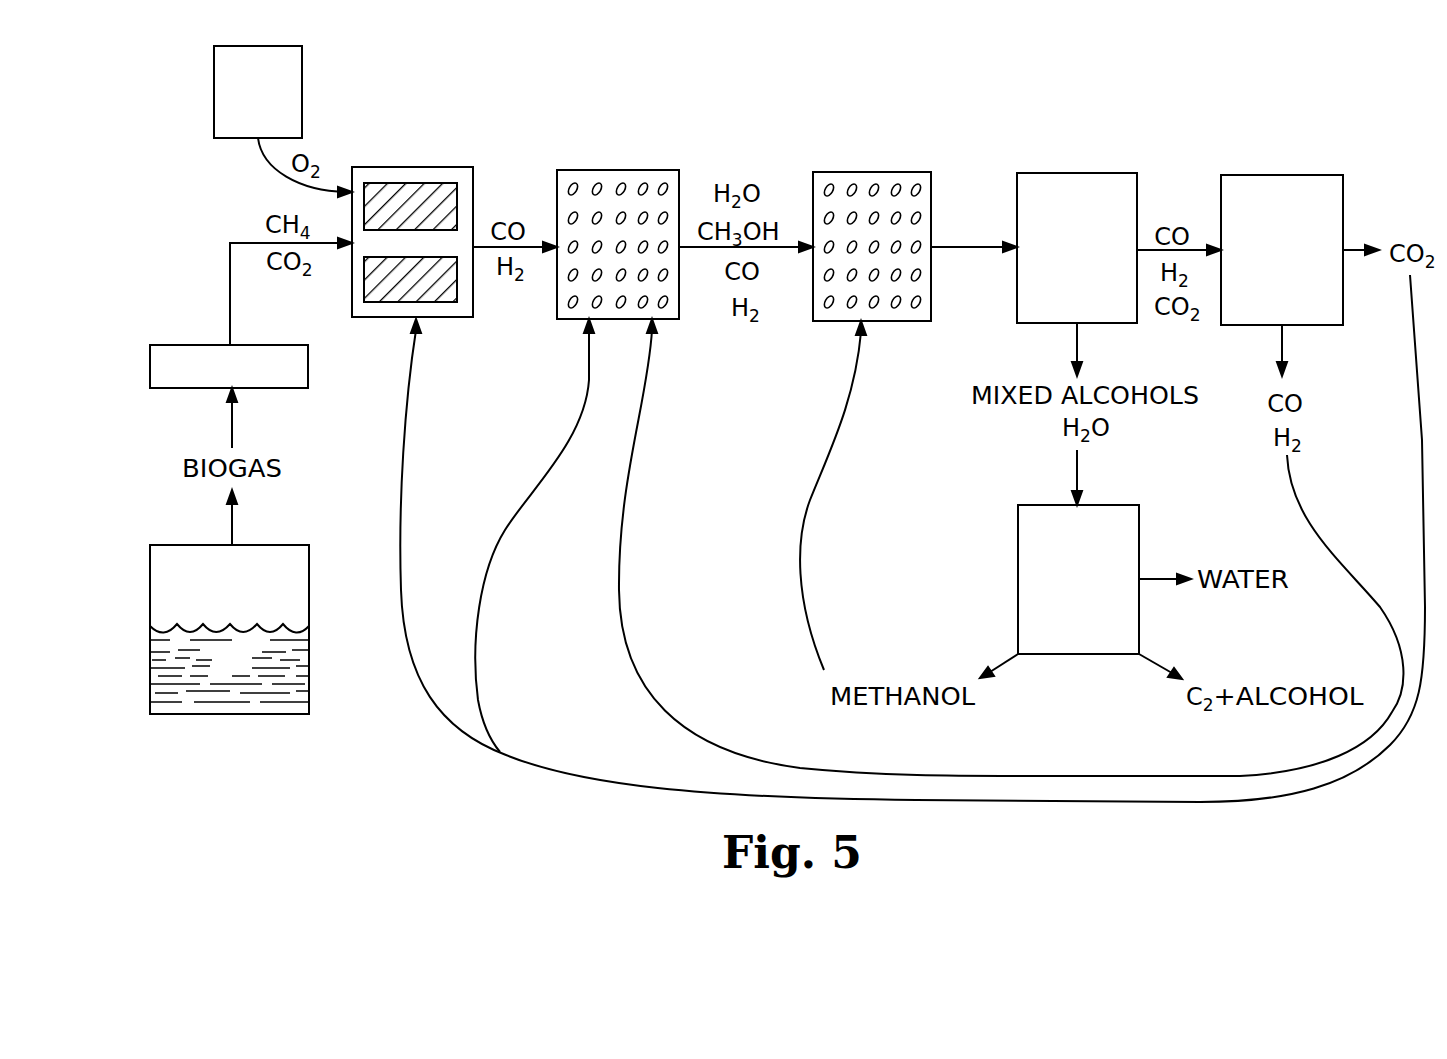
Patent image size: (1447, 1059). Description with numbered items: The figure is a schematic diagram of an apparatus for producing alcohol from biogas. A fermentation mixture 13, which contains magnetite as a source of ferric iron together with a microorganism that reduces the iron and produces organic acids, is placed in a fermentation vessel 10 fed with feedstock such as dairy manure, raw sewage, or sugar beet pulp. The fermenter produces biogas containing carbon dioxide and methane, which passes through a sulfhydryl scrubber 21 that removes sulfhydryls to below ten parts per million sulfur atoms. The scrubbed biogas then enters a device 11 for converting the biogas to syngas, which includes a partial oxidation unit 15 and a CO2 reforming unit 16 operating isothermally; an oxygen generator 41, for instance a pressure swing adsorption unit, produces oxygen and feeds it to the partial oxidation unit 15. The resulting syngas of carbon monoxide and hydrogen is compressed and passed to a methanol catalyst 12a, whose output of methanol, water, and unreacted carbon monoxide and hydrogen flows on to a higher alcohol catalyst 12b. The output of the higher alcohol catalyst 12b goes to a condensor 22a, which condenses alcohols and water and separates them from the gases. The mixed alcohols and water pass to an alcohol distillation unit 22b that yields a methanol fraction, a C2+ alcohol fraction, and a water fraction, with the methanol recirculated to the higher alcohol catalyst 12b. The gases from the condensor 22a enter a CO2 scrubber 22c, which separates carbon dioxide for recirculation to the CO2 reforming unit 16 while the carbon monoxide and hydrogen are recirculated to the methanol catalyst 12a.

The fermentation vessel 10 is at (202, 599).
The fermentation mixture 13 is at (219, 675).
The sulfhydryl scrubber 21 is at (217, 380).
The oxygen generator 41 is at (245, 110).
The device for converting biogas to syngas 11 is at (412, 243).
The partial oxidation unit 15 is at (392, 183).
The CO2 reforming unit 16 is at (376, 302).
The methanol catalyst 12a is at (595, 183).
The higher alcohol catalyst 12b is at (873, 185).
The condensor 22a is at (1058, 266).
The alcohol distillation unit 22b is at (1078, 579).
The CO2 scrubber 22c is at (1263, 266).